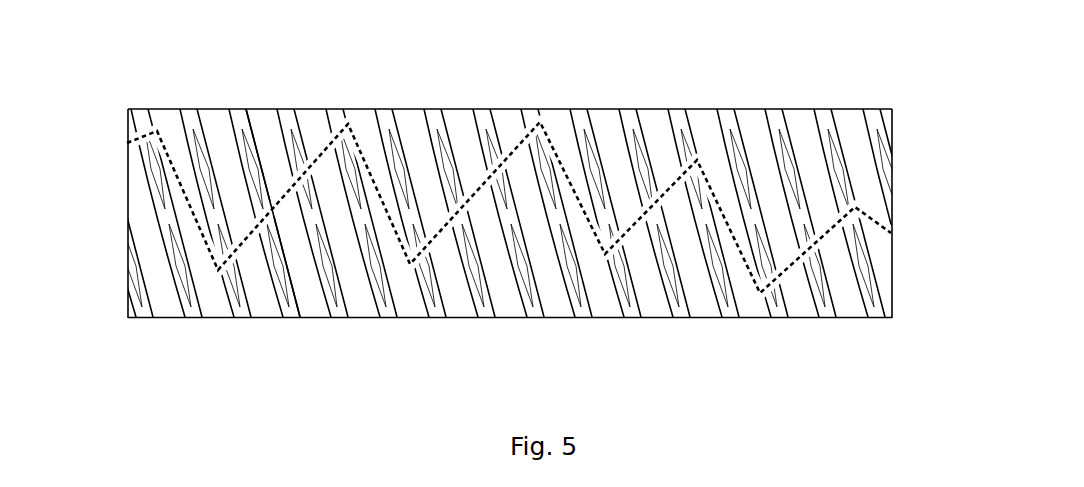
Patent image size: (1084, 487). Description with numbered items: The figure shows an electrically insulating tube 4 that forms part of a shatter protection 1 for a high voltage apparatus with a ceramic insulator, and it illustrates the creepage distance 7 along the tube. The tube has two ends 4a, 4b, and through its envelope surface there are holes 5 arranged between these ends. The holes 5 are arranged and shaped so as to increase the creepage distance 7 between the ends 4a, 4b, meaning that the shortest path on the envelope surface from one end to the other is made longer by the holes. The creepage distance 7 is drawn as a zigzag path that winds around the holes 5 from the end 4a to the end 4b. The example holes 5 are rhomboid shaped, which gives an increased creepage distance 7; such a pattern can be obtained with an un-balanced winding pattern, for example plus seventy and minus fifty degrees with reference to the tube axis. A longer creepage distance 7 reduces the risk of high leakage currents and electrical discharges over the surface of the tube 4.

The shatter protection 1 is at (502, 187).
The electrically insulating tube 4 is at (460, 108).
The end of the electrically insulating tube 4a is at (127, 156).
The end of the electrically insulating tube 4b is at (892, 140).
The holes 5 is at (289, 305).
The creepage distance 7 is at (668, 170).